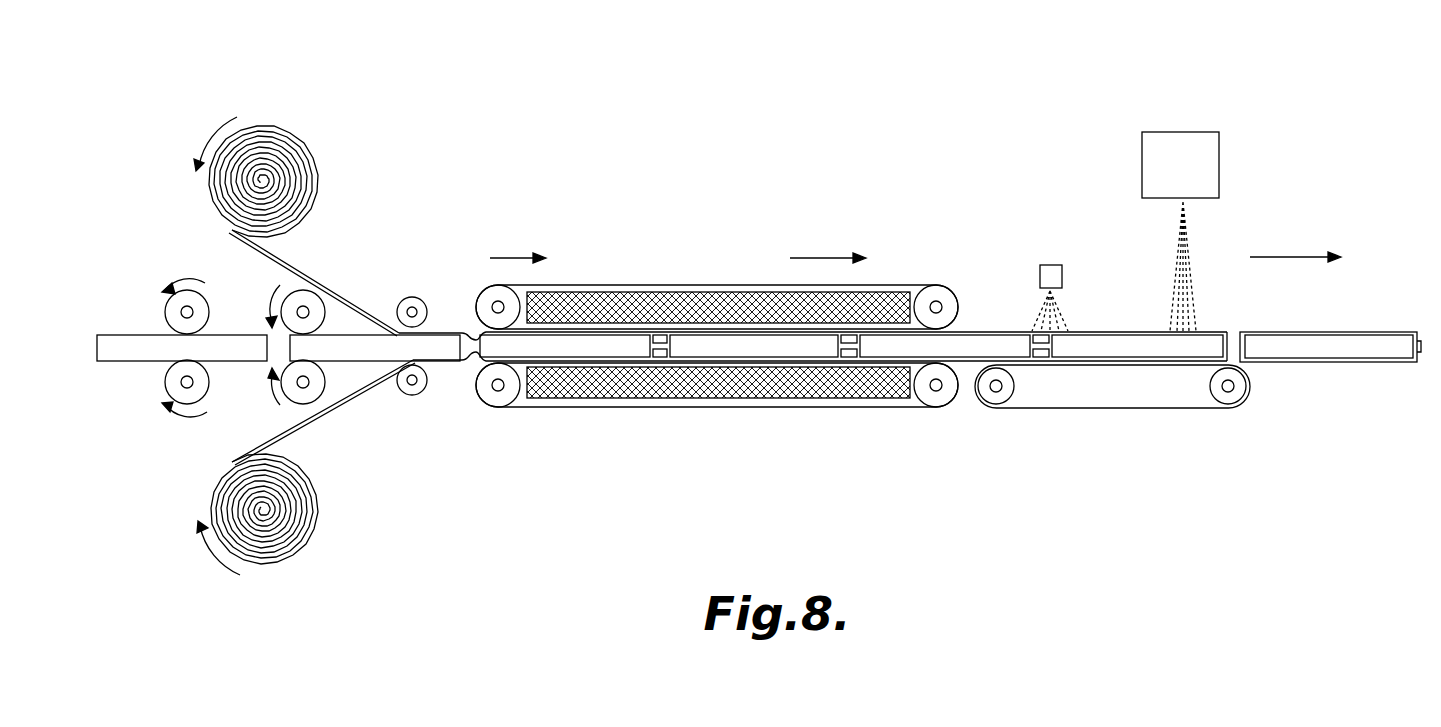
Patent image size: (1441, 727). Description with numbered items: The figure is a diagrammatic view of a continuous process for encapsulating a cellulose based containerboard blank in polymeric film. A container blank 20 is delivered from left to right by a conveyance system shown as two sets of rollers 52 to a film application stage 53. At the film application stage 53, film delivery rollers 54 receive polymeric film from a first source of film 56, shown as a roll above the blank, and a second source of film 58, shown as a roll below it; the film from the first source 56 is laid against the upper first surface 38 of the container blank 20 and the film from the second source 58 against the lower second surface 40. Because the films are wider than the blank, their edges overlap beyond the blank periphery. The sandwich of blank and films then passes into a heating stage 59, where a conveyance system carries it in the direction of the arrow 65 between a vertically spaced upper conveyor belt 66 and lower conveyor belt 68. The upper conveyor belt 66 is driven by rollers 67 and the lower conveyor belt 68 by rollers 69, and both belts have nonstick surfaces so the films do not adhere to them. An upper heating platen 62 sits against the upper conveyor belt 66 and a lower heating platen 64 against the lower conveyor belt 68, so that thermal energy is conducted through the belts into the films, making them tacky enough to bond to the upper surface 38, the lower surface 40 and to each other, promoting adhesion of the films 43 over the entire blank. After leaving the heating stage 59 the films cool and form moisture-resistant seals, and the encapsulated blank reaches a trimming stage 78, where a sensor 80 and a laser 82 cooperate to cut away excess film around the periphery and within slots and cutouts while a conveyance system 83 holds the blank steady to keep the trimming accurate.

The container blank 20 is at (122, 334).
The rollers 52 is at (165, 298).
The film application stage 53 is at (375, 213).
The film delivery rollers 54 is at (417, 297).
The first source of film 56 is at (305, 146).
The second source of film 58 is at (312, 540).
The upper first surface 38 is at (358, 333).
The lower second surface 40 is at (355, 362).
The films 43 is at (313, 430).
The heating stage 59 is at (715, 182).
The arrow 65 is at (511, 257).
The upper conveyor belt 66 is at (648, 284).
The upper heating platen 62 is at (715, 291).
The lower heating platen 64 is at (724, 399).
The rollers 67 is at (485, 295).
The lower conveyor belt 68 is at (626, 409).
The rollers 69 is at (493, 406).
The trimming stage 78 is at (1086, 134).
The sensor 80 is at (1052, 264).
The laser 82 is at (1192, 131).
The conveyance system 83 is at (1176, 409).